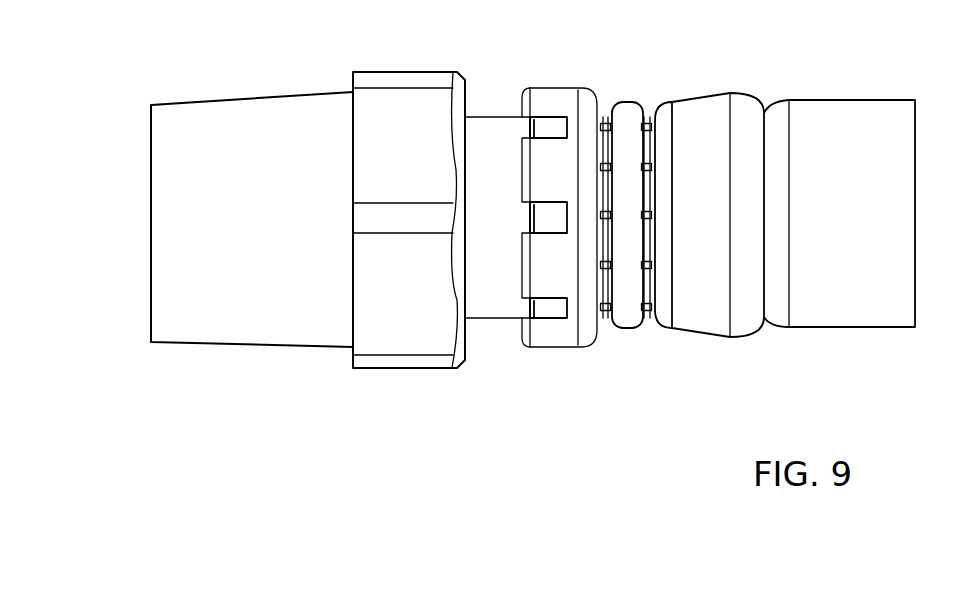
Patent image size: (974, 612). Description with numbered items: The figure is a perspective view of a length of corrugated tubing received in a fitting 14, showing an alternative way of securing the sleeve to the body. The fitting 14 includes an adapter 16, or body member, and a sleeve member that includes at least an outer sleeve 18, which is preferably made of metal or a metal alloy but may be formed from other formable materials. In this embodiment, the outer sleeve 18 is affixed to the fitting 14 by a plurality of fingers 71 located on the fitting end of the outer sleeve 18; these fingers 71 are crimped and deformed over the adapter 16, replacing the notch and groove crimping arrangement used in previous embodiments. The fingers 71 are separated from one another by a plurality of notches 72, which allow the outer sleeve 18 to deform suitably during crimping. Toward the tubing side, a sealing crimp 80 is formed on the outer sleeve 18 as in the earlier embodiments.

The fitting 14 is at (488, 80).
The adapter 16 is at (497, 318).
The outer sleeve 18 is at (570, 107).
The fingers 71 is at (547, 97).
The notches 72 is at (548, 218).
The sealing crimp 80 is at (645, 167).